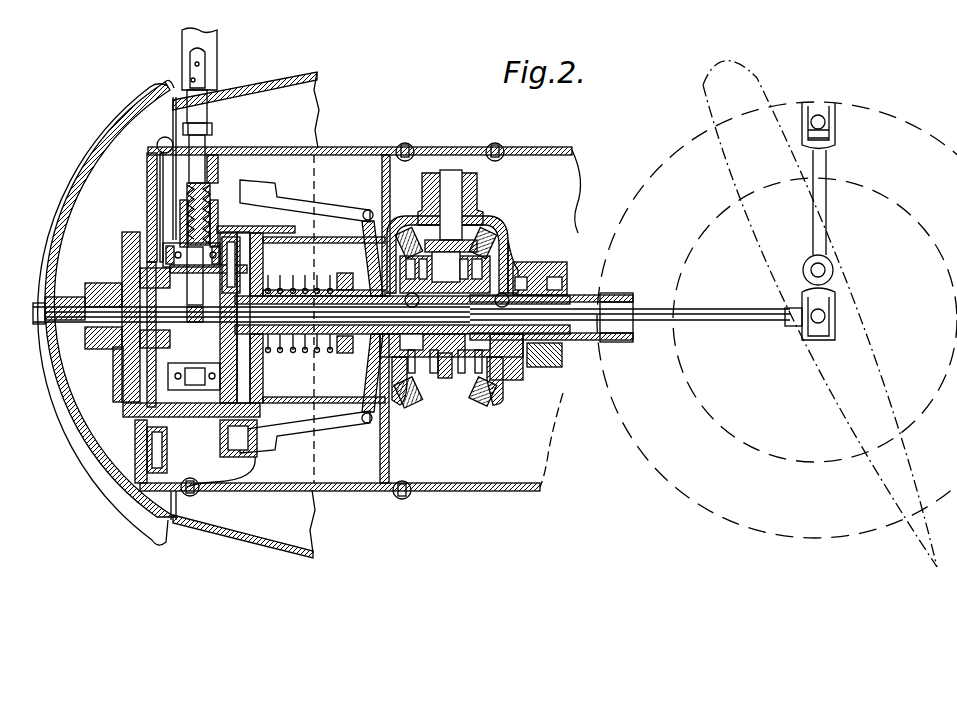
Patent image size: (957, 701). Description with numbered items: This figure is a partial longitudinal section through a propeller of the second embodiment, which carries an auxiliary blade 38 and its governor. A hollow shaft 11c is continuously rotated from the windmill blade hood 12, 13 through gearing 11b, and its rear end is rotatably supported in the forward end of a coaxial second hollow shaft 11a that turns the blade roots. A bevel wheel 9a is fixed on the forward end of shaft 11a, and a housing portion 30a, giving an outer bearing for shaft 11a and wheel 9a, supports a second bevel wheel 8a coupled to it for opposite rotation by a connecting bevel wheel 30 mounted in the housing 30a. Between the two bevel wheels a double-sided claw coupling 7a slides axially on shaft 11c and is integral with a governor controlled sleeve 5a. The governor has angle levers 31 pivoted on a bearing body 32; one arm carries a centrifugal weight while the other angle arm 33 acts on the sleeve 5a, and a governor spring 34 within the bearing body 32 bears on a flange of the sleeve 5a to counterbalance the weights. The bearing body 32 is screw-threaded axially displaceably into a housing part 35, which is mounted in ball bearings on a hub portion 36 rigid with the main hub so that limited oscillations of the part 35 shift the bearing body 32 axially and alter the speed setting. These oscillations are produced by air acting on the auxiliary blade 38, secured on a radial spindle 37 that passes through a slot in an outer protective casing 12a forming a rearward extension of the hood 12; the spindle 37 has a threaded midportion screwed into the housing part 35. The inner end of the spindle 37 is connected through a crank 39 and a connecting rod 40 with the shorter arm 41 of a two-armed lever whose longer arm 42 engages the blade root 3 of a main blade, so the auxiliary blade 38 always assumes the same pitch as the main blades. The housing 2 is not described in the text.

The housing 2 is at (282, 146).
The blade root 3 is at (700, 497).
The governor controlled sleeve 5a is at (401, 216).
The double-sided claw coupling 7a is at (438, 378).
The second bevel wheel 8a is at (408, 402).
The bevel wheel 9a is at (482, 400).
The second hollow shaft 11a is at (622, 345).
The gearing 11b is at (232, 434).
The hollow shaft 11c is at (576, 296).
The windmill blade hood 12 is at (88, 452).
The outer protective casing 12a is at (263, 548).
The windmill blade hood 13 is at (117, 510).
The connecting bevel wheel 30 is at (482, 222).
The housing portion 30a is at (505, 232).
The angle levers 31 is at (336, 210).
The bearing body 32 is at (317, 318).
The angle arm 33 is at (366, 212).
The governor spring 34 is at (324, 288).
The housing part 35 is at (233, 225).
The hub portion 36 is at (147, 218).
The spindle 37 is at (190, 183).
The auxiliary blade 38 is at (207, 46).
The crank 39 is at (204, 323).
The connecting rod 40 is at (574, 341).
The shorter arm 41 is at (833, 290).
The longer arm 42 is at (821, 188).